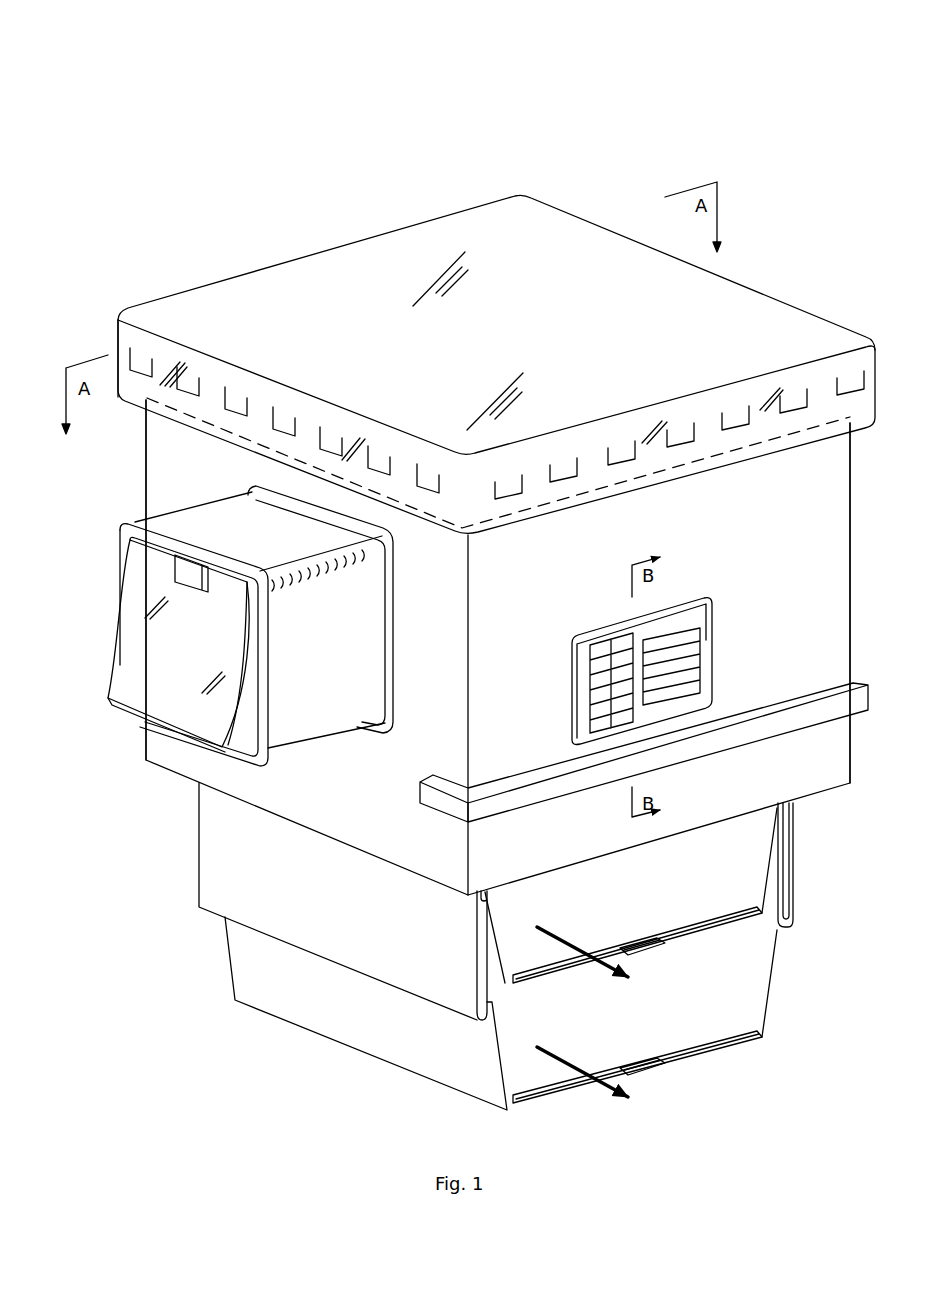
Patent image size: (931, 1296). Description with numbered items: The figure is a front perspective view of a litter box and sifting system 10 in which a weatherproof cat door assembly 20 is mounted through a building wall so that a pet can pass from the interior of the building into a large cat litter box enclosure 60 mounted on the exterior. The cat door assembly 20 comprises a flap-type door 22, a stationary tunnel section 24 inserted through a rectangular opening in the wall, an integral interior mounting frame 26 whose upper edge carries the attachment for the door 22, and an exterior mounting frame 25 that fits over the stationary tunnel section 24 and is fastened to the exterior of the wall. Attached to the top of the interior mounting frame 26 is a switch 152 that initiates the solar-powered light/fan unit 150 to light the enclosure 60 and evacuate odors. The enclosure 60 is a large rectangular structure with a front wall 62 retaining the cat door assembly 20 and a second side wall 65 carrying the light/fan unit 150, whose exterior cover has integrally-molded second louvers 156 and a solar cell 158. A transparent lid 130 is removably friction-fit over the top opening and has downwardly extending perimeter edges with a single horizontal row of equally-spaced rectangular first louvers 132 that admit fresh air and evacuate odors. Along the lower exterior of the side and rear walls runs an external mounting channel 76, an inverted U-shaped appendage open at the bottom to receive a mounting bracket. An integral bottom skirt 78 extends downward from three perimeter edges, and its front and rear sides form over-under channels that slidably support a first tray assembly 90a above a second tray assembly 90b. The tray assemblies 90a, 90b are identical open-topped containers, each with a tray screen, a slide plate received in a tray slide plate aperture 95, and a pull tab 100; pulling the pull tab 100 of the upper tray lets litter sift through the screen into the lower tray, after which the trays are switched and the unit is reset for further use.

The litter box and sifting system 10 is at (740, 97).
The transparent lid 130 is at (758, 302).
The first louvers 132 is at (380, 457).
The cat litter box enclosure 60 is at (126, 460).
The front wall 62 is at (155, 478).
The second side wall 65 is at (830, 495).
The cat door assembly 20 is at (108, 543).
The flap-type door 22 is at (150, 657).
The stationary tunnel section 24 is at (338, 648).
The exterior mounting frame 25 is at (390, 577).
The interior mounting frame 26 is at (122, 593).
The switch 152 is at (195, 588).
The solar-powered light/fan unit 150 is at (722, 595).
The second louvers 156 is at (685, 632).
The solar cell 158 is at (597, 653).
The external mounting channel 76 is at (435, 793).
The bottom skirt 78 is at (237, 838).
The first tray assembly 90a is at (512, 933).
The second tray assembly 90b is at (518, 1045).
The tray slide plate aperture 95 is at (750, 1033).
The pull tab 100 is at (667, 1060).